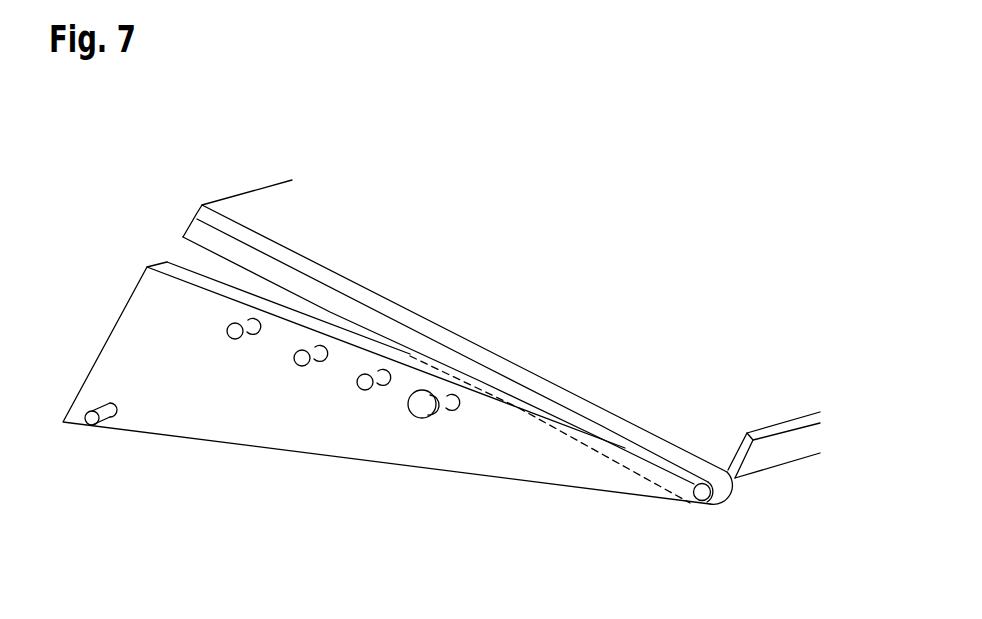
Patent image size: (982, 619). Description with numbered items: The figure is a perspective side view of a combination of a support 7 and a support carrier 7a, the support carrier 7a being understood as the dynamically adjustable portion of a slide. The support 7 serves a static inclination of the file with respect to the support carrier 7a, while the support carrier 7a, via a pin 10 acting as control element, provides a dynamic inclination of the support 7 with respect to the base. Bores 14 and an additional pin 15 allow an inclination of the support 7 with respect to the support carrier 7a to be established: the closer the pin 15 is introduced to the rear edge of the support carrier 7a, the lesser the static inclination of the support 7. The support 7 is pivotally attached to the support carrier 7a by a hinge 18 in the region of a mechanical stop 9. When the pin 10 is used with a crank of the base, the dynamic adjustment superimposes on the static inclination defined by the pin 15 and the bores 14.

The support 7 is at (562, 323).
The support carrier 7a is at (133, 318).
The mechanical stop 9 is at (775, 455).
The pin 10 is at (78, 425).
The bores 14 is at (235, 333).
The additional pin 15 is at (416, 420).
The hinge 18 is at (695, 503).